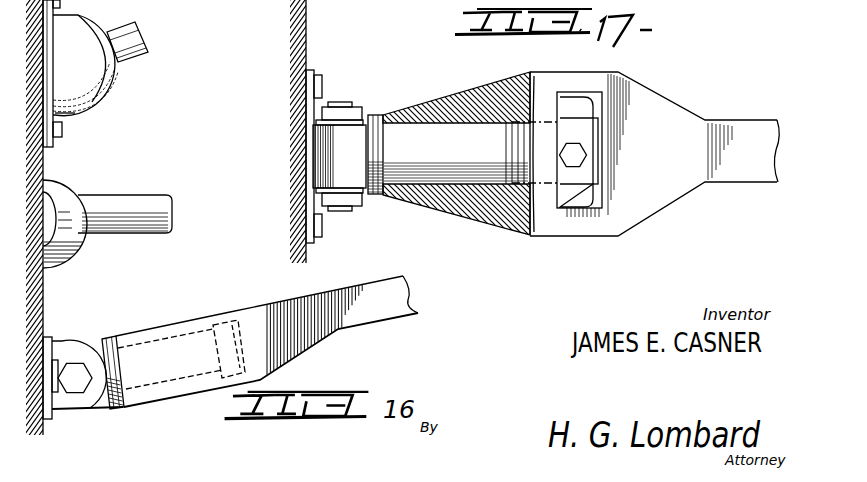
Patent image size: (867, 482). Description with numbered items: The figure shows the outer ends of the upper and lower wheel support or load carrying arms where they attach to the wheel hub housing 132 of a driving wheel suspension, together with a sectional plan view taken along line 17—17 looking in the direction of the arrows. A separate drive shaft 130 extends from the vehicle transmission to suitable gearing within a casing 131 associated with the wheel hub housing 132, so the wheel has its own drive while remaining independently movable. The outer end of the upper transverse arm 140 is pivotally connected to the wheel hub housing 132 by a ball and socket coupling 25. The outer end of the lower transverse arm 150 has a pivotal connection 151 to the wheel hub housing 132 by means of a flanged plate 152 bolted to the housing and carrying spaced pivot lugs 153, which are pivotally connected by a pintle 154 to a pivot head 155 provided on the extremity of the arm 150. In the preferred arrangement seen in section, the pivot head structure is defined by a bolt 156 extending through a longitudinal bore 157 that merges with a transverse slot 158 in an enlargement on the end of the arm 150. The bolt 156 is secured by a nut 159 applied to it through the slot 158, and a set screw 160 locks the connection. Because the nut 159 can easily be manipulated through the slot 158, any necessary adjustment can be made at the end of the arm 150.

In FIG. 16, the section line 17— 17 is at (108, 312).
In FIG. 17, the section line 17— 17 is at (412, 259).
In FIG. 16, the ball and socket coupling 25 is at (112, 100).
In FIG. 16, the drive shaft 130 is at (106, 197).
In FIG. 16, the casing 131 is at (67, 186).
In FIG. 16, the wheel hub housing 132 is at (47, 151).
In FIG. 17, the wheel hub housing 132 is at (309, 46).
In FIG. 16, the upper transverse arm 140 is at (150, 58).
In FIG. 16, the lower transverse arm 150 is at (308, 348).
In FIG. 17, the lower transverse arm 150 is at (712, 124).
In FIG. 16, the pivotal connection 151 is at (113, 409).
In FIG. 17, the pivotal connection 151 is at (383, 117).
In FIG. 16, the flanged plate 152 is at (55, 340).
In FIG. 17, the flanged plate 152 is at (311, 68).
In FIG. 16, the pivot lug 153 is at (63, 411).
In FIG. 17, the pivot lug 153 is at (370, 99).
In FIG. 16, the pintle 154 is at (81, 397).
In FIG. 17, the pintle 154 is at (352, 200).
In FIG. 16, the pivot head 155 is at (97, 342).
In FIG. 17, the pivot head 155 is at (340, 152).
In FIG. 16, the bolt 156 is at (165, 369).
In FIG. 17, the bolt 156 is at (468, 137).
In FIG. 16, the longitudinal bore 157 is at (193, 332).
In FIG. 17, the longitudinal bore 157 is at (447, 122).
In FIG. 17, the transverse slot 158 is at (595, 112).
In FIG. 16, the nut 159 is at (228, 318).
In FIG. 17, the nut 159 is at (593, 102).
In FIG. 17, the set screw 160 is at (585, 160).